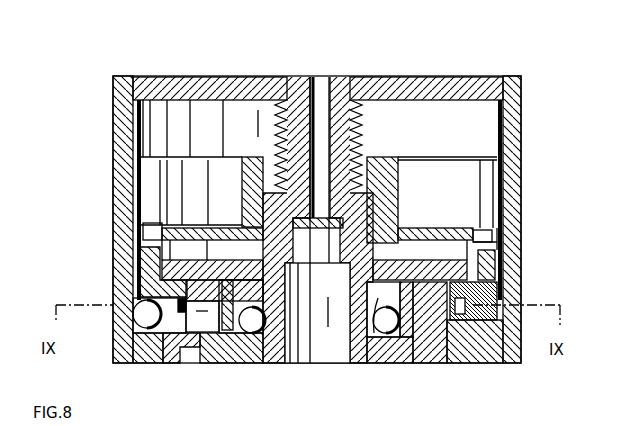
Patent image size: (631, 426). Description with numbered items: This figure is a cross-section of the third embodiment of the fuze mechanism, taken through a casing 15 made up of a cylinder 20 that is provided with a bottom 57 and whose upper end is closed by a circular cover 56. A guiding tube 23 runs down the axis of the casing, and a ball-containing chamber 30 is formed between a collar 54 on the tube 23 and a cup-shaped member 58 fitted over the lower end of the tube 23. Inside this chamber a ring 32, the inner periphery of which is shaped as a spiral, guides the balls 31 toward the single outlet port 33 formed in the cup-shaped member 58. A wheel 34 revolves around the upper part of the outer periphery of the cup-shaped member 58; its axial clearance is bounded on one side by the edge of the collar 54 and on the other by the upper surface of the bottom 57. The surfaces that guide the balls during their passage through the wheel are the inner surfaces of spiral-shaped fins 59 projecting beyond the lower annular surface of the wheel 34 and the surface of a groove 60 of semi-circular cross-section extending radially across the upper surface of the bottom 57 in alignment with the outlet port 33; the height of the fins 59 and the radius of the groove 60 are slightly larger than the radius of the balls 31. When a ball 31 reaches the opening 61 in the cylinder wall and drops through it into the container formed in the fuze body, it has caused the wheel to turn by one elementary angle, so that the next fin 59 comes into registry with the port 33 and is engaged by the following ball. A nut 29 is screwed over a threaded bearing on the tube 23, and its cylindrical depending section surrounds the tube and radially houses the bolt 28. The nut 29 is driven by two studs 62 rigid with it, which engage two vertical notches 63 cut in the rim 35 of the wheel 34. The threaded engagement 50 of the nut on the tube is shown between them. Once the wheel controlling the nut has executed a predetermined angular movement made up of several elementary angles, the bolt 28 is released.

The casing 15 is at (530, 176).
The cylinder 20 is at (524, 116).
The guiding tube 23 is at (341, 92).
The bolt 28 is at (364, 168).
The nut 29 is at (398, 172).
The ball-containing chamber 30 is at (367, 360).
The balls 31 is at (400, 340).
The ring 32 is at (426, 340).
The outlet port 33 is at (207, 322).
The wheel 34 is at (453, 159).
The rim 35 is at (128, 252).
The thread 50 is at (361, 148).
The collar 54 is at (398, 260).
The circular cover 56 is at (192, 77).
The bottom 57 is at (510, 352).
The cup-shaped member 58 is at (460, 343).
The spiral-shaped fins 59 is at (168, 335).
The groove 60 is at (148, 334).
The opening 61 is at (122, 317).
The studs 62 is at (143, 214).
The vertical notches 63 is at (148, 171).